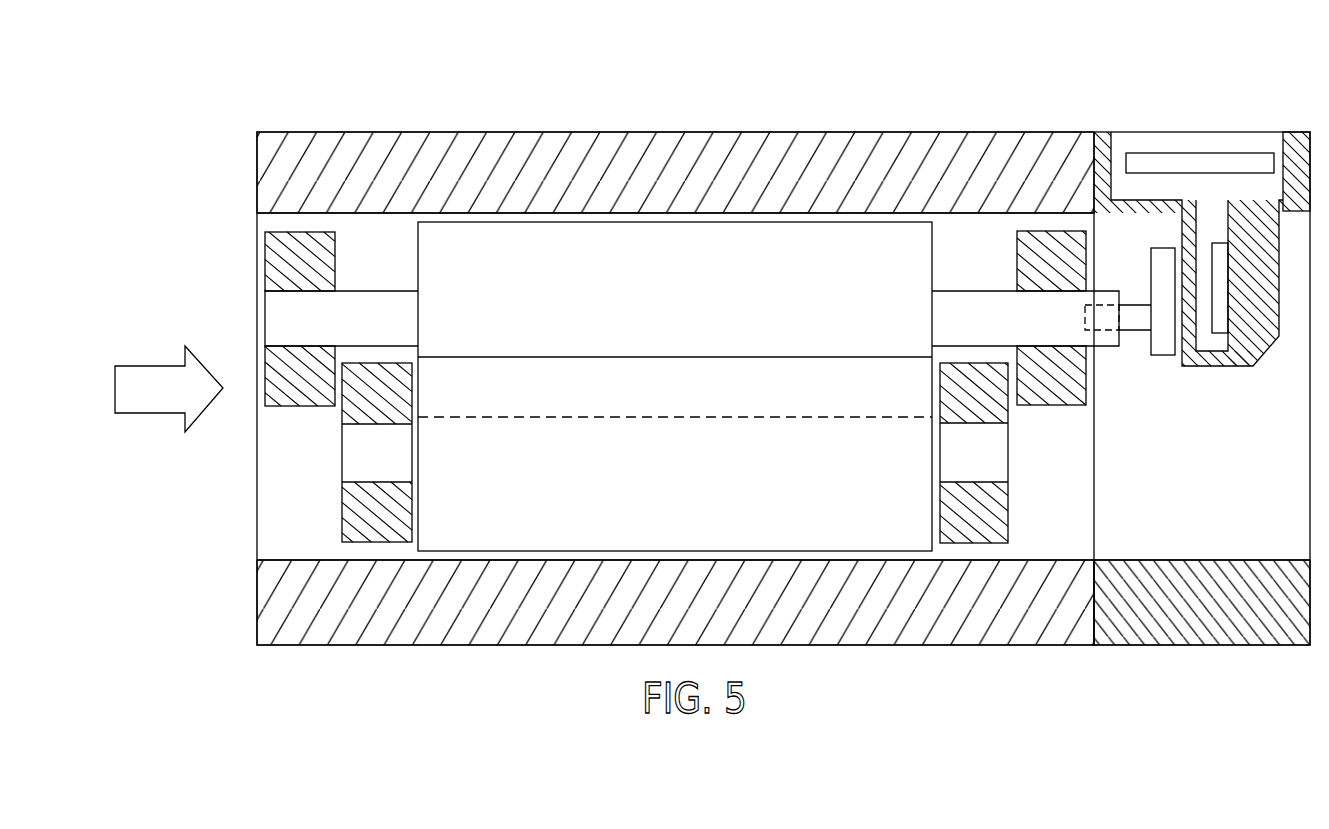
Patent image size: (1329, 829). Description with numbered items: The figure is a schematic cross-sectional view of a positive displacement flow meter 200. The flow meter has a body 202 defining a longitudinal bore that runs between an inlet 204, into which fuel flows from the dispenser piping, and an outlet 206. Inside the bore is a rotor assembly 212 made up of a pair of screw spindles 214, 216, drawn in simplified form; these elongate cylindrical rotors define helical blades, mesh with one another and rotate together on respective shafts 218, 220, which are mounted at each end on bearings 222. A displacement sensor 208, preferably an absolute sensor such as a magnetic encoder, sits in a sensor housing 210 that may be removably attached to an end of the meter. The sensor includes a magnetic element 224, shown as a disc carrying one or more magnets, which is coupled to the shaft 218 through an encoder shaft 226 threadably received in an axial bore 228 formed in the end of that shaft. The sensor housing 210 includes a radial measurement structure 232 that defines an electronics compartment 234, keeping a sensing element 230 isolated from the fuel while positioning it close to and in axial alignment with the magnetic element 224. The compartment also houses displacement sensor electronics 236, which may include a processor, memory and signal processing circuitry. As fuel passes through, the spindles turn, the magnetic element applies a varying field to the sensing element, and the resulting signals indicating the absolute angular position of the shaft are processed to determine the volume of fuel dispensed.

The flow meter 200 is at (243, 103).
The body 202 is at (383, 132).
The inlet 204 is at (232, 298).
The outlet 206 is at (1097, 507).
The displacement sensor 208 is at (1128, 103).
The sensor housing 210 is at (1295, 132).
The rotor assembly 212 is at (492, 256).
The screw spindle 214 is at (676, 247).
The screw spindle 216 is at (752, 370).
The shaft 218 is at (383, 305).
The shaft 220 is at (355, 455).
The bearings 222 is at (272, 392).
The magnetic element 224 is at (1162, 356).
The encoder shaft 226 is at (1140, 315).
The axial bore 228 is at (1100, 332).
The sensing element 230 is at (1237, 367).
The radial measurement structure 232 is at (1192, 367).
The electronics compartment 234 is at (1150, 195).
The displacement sensor electronics 236 is at (1225, 153).